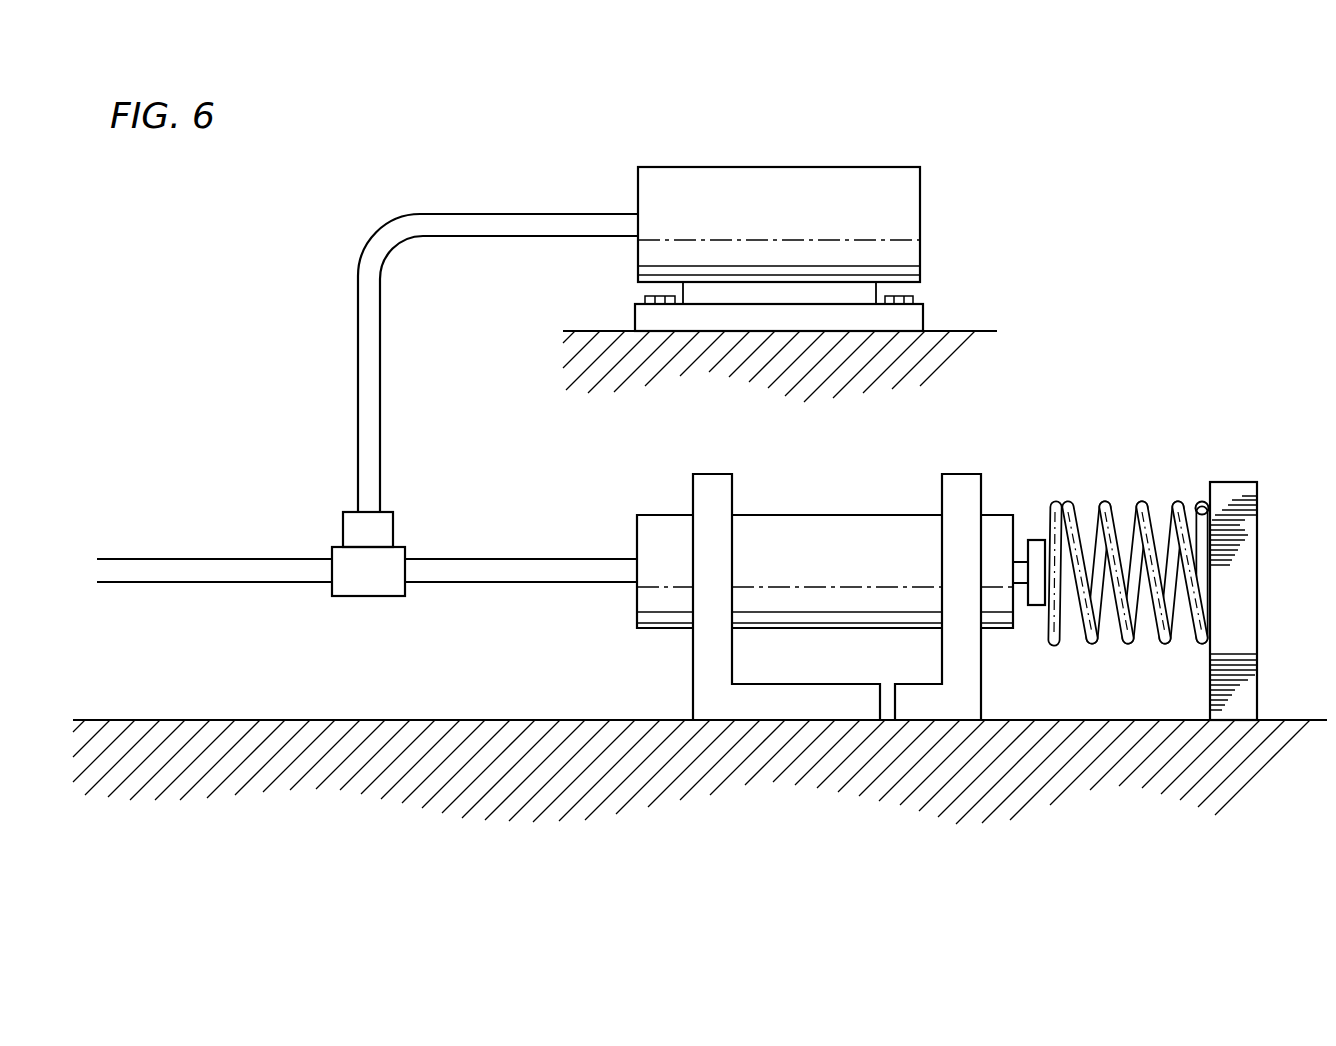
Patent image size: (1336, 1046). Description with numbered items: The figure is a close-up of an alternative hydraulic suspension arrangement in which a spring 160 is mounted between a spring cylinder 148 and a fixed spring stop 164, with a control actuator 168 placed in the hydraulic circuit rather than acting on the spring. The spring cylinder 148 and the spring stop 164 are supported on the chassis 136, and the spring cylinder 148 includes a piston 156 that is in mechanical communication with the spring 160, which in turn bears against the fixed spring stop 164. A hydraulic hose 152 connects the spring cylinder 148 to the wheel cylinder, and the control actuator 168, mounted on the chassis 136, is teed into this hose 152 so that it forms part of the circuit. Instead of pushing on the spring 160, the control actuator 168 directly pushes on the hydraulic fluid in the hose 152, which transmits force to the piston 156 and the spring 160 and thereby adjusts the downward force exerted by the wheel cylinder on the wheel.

The chassis 136 is at (323, 720).
The spring cylinder 148 is at (832, 515).
The hydraulic hose 152 is at (543, 213).
The piston 156 is at (1037, 540).
The spring 160 is at (1143, 505).
The fixed spring stop 164 is at (1232, 482).
The control actuator 168 is at (810, 167).